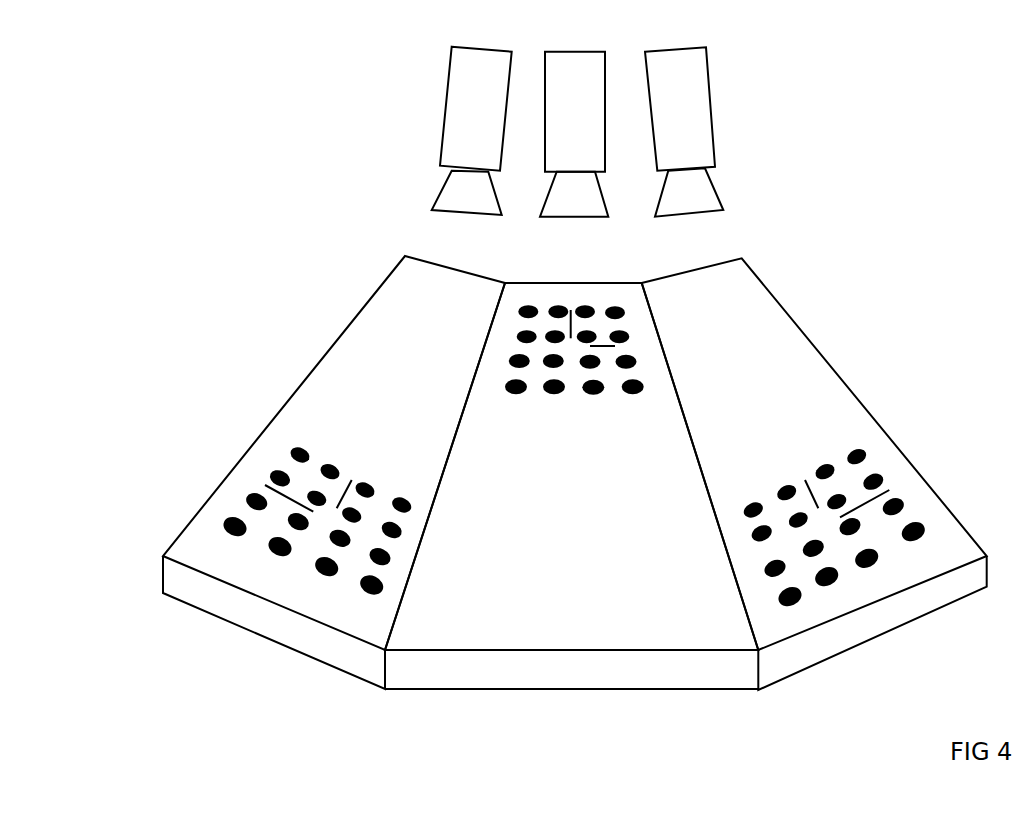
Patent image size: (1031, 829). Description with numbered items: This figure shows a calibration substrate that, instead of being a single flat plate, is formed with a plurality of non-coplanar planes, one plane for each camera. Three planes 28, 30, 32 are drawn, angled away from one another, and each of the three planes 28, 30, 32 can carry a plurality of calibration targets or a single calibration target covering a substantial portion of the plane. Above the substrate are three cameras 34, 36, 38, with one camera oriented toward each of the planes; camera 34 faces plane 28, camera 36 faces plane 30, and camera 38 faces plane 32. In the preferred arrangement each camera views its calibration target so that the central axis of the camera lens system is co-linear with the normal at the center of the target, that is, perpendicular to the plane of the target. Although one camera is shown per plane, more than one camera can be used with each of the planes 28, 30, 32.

The plane 28 is at (302, 417).
The plane 30 is at (585, 596).
The plane 32 is at (838, 405).
The thruster 34 is at (467, 45).
The thruster 36 is at (555, 50).
The thruster 38 is at (653, 48).